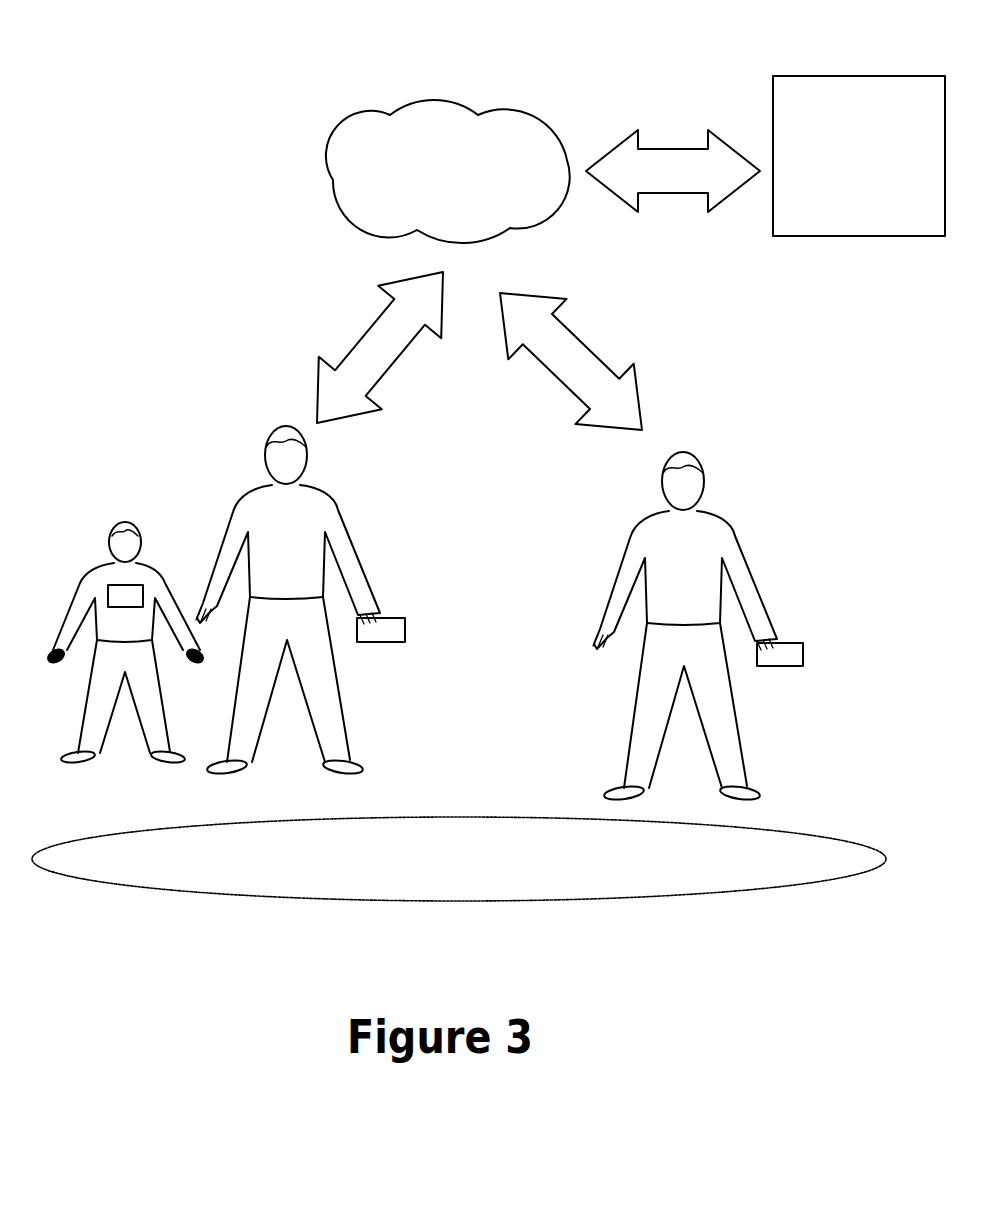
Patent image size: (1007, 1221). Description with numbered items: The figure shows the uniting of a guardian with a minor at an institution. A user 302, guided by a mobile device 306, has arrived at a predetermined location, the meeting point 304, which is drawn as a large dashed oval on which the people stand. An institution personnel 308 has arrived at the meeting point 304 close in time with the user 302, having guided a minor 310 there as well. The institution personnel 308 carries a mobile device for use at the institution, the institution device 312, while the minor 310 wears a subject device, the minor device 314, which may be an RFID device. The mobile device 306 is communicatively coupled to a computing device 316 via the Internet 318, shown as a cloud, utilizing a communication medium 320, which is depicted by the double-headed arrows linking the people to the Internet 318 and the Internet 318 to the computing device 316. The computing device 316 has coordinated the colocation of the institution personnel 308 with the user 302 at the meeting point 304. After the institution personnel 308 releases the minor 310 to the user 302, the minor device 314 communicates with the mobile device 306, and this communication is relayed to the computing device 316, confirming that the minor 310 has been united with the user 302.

The user 302 is at (730, 523).
The meeting point 304 is at (424, 885).
The mobile device 306 is at (797, 640).
The institution personnel 308 is at (345, 517).
The minor 310 is at (128, 520).
The institution device 312 is at (405, 620).
The minor device 314 is at (132, 583).
The computing device 316 is at (842, 181).
The Internet 318 is at (427, 184).
The communication medium 320 is at (658, 146).